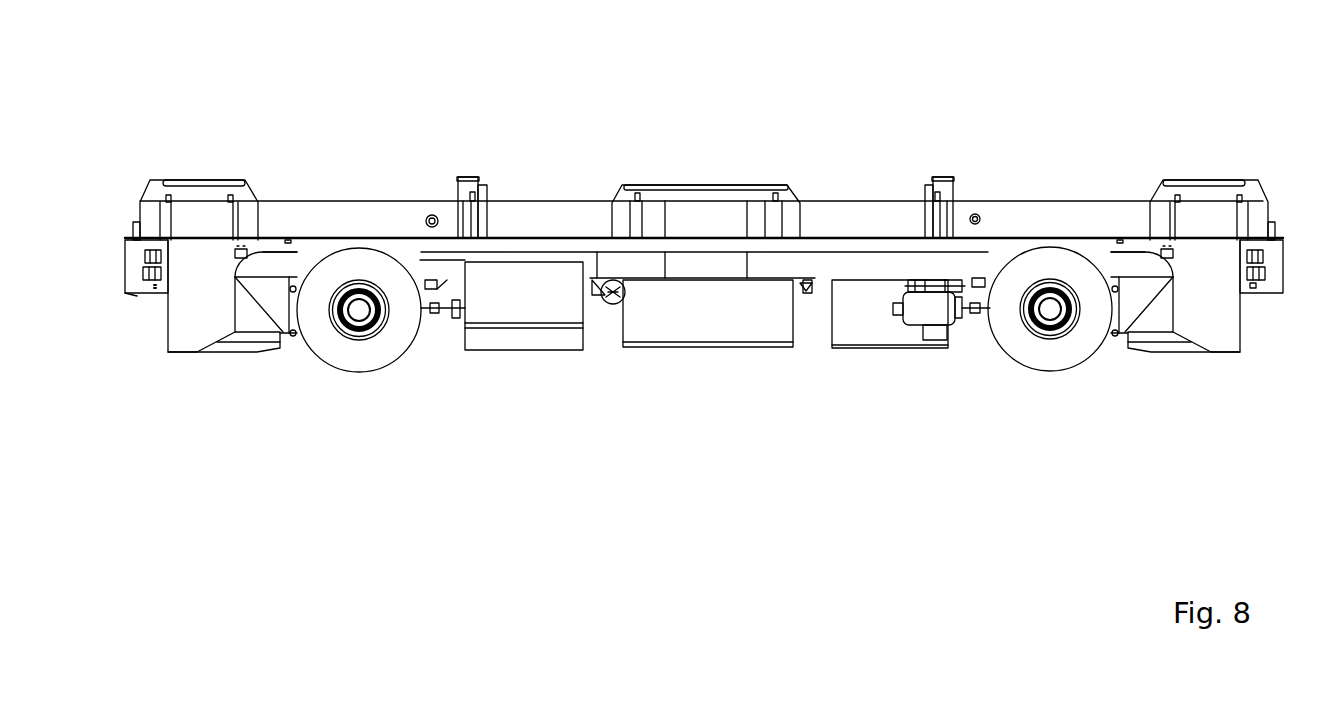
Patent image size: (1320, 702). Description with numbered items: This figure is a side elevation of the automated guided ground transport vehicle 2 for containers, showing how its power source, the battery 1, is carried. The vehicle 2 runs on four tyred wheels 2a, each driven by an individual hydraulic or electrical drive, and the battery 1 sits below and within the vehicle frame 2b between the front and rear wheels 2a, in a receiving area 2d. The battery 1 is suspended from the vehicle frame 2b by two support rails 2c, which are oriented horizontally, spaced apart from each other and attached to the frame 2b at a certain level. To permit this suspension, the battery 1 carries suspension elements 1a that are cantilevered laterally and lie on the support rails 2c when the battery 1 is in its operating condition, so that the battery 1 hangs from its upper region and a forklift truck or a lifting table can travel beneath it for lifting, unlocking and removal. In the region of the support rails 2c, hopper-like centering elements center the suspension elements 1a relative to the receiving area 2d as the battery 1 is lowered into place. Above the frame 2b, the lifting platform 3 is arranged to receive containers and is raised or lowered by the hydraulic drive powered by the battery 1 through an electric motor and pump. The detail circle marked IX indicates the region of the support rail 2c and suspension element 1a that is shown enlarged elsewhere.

The battery 1 is at (697, 318).
The suspension elements 1a is at (803, 288).
The transport vehicle 2 is at (404, 158).
The wheels 2a is at (333, 350).
The vehicle frame 2b is at (1192, 263).
The support rails 2c is at (803, 290).
The receiving area 2d is at (600, 355).
The lifting platform 3 is at (1020, 218).
The detail IX is at (625, 297).